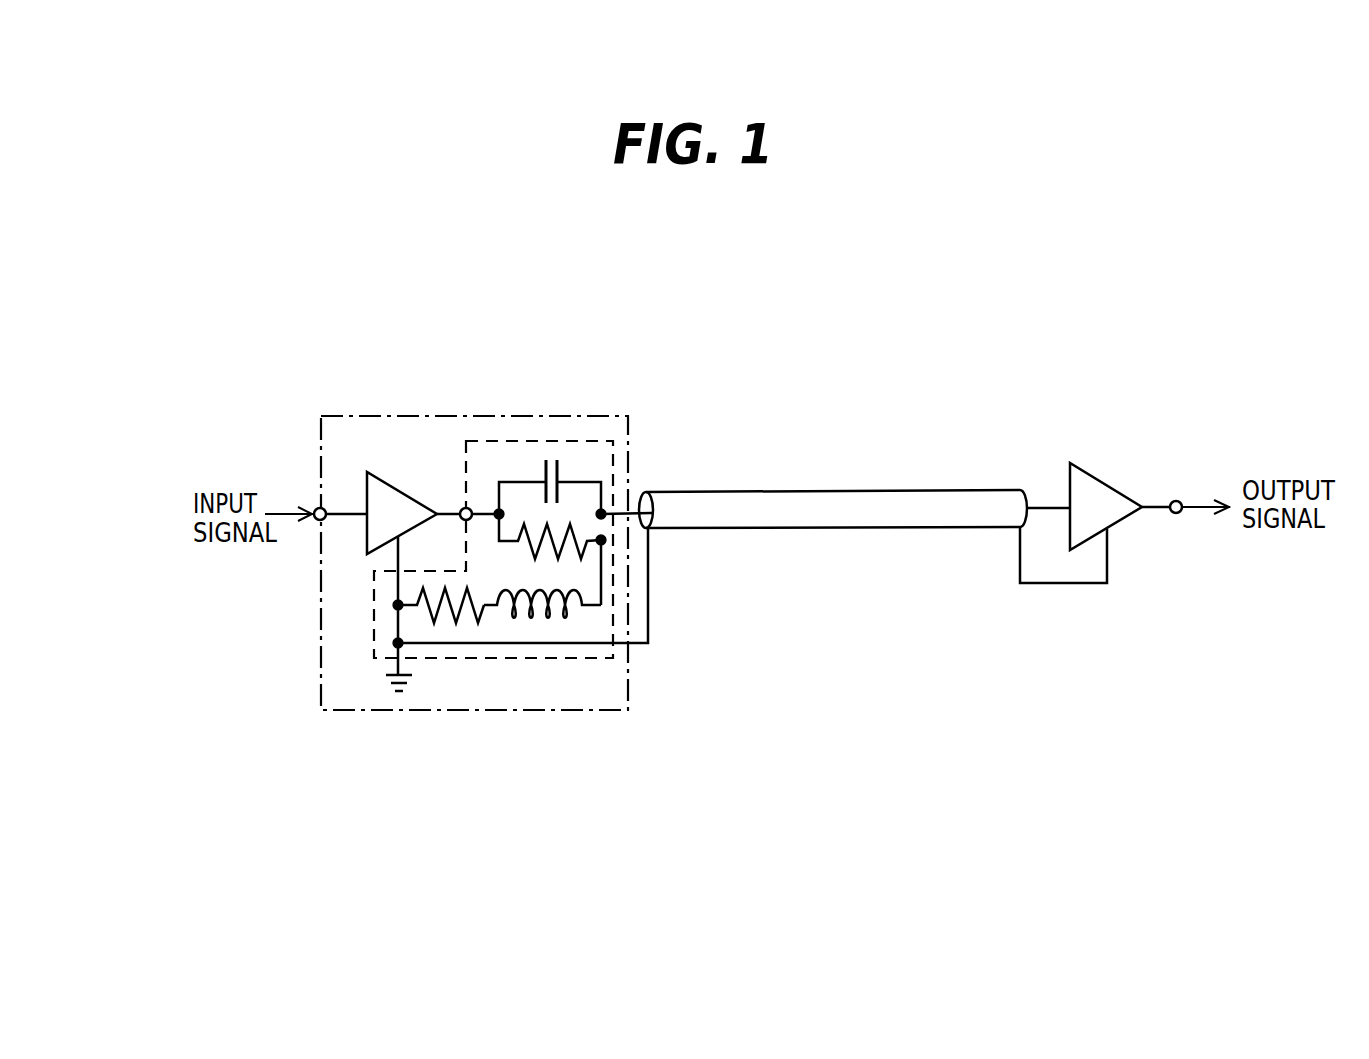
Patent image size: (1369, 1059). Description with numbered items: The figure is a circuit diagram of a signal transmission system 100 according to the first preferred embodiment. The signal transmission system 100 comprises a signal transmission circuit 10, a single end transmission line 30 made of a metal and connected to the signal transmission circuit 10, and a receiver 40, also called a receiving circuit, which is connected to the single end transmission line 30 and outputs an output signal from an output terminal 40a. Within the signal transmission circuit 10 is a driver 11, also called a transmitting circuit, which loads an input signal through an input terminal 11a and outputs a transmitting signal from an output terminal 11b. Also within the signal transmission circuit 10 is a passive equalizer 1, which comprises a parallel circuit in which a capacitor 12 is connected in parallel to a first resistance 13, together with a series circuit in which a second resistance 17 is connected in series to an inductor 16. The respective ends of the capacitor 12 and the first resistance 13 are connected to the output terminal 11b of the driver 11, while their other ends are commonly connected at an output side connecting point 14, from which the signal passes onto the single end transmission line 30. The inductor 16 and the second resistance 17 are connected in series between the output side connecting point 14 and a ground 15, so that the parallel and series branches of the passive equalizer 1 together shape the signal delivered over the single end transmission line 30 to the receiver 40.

The passive equalizer 1 is at (613, 660).
The signal transmission circuit 10 is at (327, 416).
The driver 11 is at (367, 498).
The input terminal 11a is at (318, 521).
The output terminal 11b is at (464, 507).
The capacitor 12 is at (546, 458).
The first resistance 13 is at (590, 550).
The output side connecting point 14 is at (604, 518).
The ground 15 is at (390, 674).
The inductor 16 is at (578, 612).
The second resistance 17 is at (440, 612).
The single end transmission line 30 is at (814, 496).
The receiver 40 is at (1091, 495).
The output terminal 40a is at (1177, 514).
The signal transmission system 100 is at (868, 342).